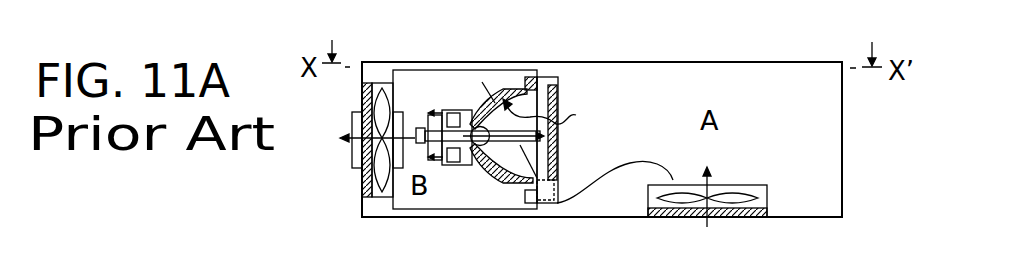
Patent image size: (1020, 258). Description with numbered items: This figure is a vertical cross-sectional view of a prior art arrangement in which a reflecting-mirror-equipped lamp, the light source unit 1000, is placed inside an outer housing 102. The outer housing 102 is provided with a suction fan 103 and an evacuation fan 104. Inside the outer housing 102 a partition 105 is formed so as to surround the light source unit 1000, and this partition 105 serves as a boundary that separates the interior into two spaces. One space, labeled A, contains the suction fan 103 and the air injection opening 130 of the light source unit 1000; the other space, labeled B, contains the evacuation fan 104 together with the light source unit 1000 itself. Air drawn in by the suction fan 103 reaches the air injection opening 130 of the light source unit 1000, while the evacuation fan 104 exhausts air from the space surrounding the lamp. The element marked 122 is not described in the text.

The outer housing 102 is at (647, 62).
The partition 105 is at (427, 69).
The evacuation fan 104 is at (361, 190).
The light source unit 1000 is at (508, 76).
The air inlet path 122 is at (566, 115).
The air injection opening 130 is at (547, 204).
The suction fan 103 is at (728, 218).